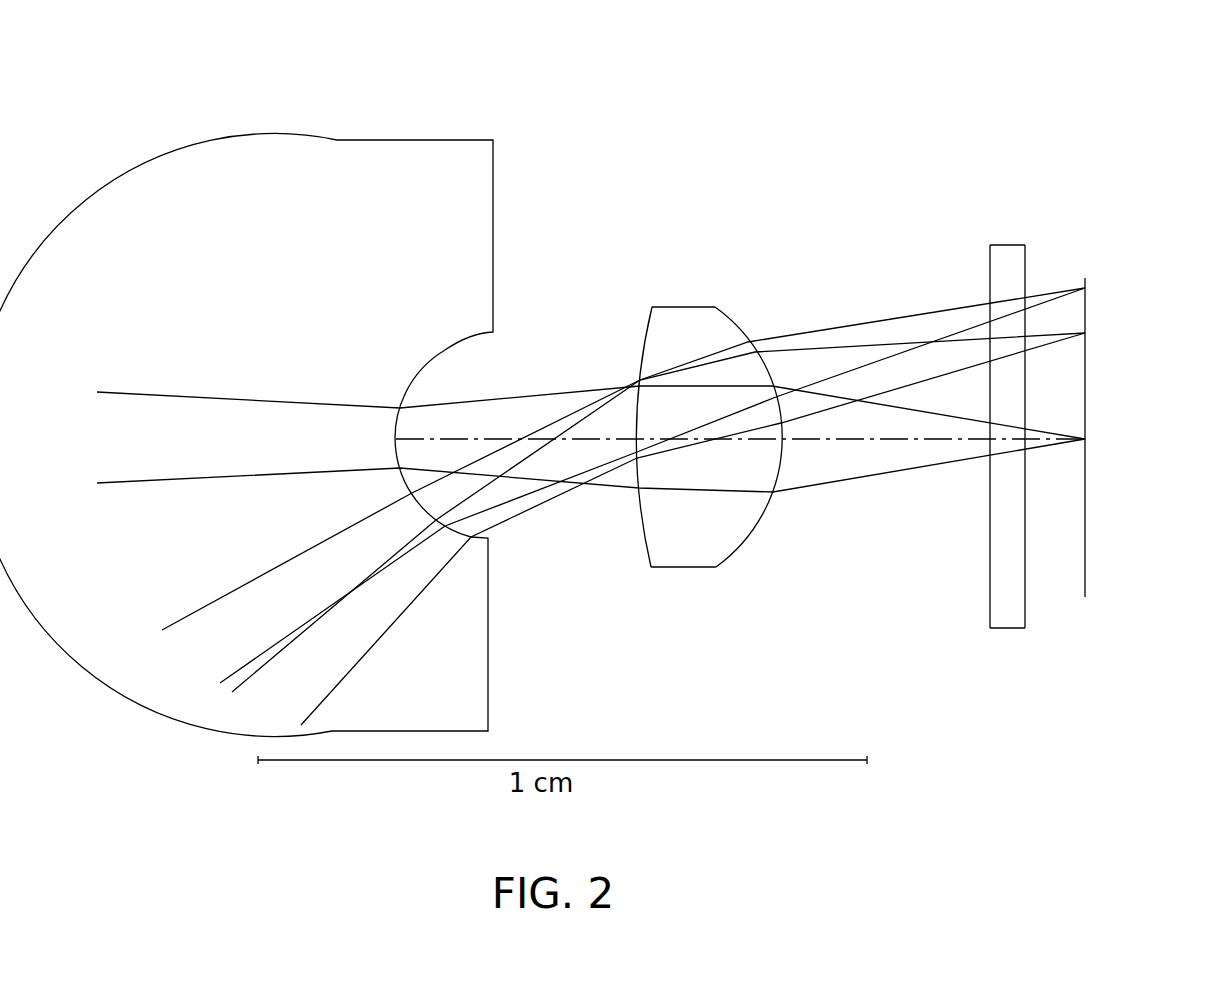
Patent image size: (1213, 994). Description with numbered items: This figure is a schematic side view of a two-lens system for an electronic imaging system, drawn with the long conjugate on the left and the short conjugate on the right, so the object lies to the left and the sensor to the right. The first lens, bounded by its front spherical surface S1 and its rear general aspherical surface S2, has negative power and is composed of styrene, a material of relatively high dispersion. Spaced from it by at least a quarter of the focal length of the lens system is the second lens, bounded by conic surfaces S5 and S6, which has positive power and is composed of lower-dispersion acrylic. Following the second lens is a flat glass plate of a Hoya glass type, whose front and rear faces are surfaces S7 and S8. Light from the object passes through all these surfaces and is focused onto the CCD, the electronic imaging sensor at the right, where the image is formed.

The first surface of first lens S1 is at (142, 273).
The second surface of first lens S2 is at (445, 350).
The fifth surface (front surface of second lens) S5 is at (644, 350).
The sixth surface (rear surface of second lens) S6 is at (733, 326).
The seventh surface (front face of glass plate) S7 is at (990, 281).
The eighth surface (rear face of glass plate) S8 is at (1027, 288).
The element CCD is at (1085, 582).